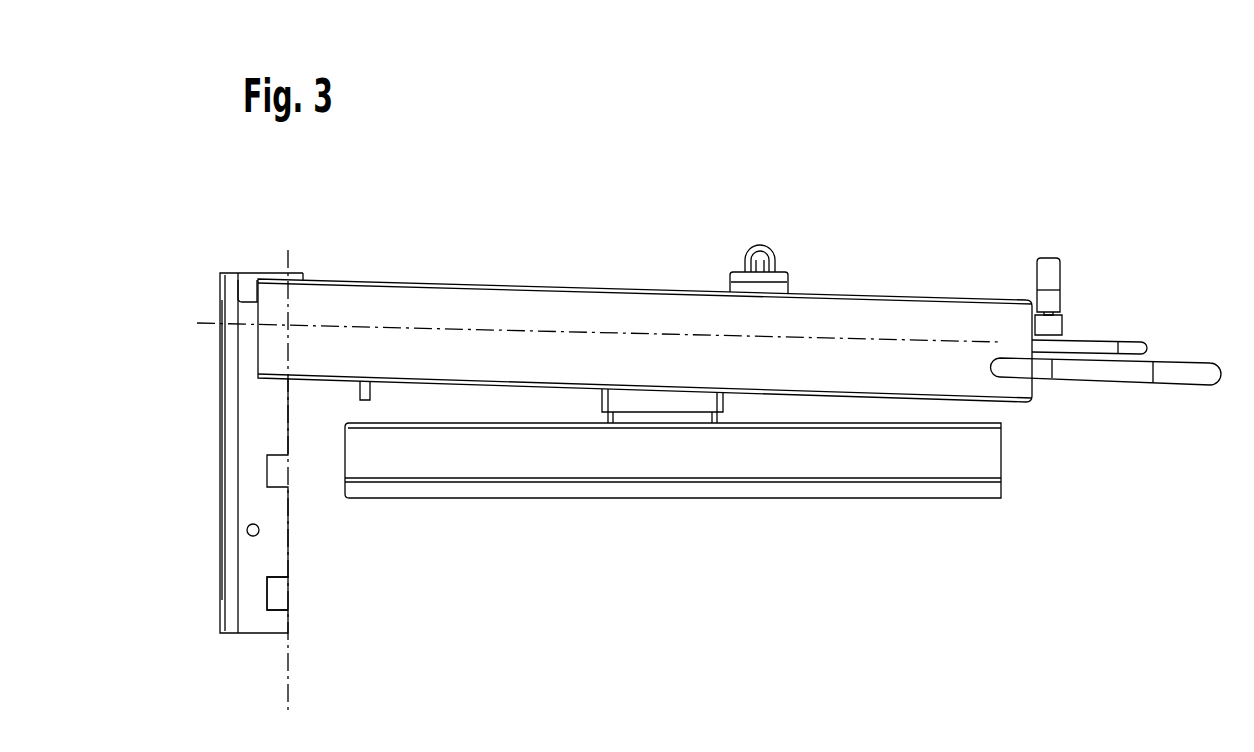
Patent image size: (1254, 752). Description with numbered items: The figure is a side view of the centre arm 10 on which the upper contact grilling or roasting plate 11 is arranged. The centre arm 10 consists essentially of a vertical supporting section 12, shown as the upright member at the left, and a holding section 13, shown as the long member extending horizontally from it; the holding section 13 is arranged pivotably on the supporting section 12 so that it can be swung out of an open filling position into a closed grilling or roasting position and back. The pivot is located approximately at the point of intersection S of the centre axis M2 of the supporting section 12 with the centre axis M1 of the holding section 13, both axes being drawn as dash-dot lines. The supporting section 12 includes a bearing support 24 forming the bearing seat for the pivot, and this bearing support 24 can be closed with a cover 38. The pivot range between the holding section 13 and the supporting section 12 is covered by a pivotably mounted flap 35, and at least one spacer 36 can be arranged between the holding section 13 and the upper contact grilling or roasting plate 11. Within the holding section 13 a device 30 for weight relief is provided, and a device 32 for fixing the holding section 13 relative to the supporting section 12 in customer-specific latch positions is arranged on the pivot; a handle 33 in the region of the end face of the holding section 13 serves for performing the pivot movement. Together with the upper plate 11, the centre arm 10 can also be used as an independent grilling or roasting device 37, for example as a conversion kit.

The centre arm 10 is at (645, 295).
The upper contact grilling or roasting plate 11 is at (832, 486).
The vertical supporting section 12 is at (208, 560).
The holding section 13 is at (521, 313).
The bearing support 24 is at (258, 614).
The device for weight relief 30 is at (1050, 252).
The device for fixing the holding section 32 is at (1112, 330).
The handle 33 is at (1181, 374).
The flap 35 is at (248, 288).
The spacer 36 is at (360, 394).
The independent grilling or roasting device 37 is at (645, 248).
The cover 38 is at (237, 489).
The centre axis of the holding section M1 is at (848, 325).
The centre axis of the supporting section M2 is at (290, 693).
The point of intersection S is at (284, 330).